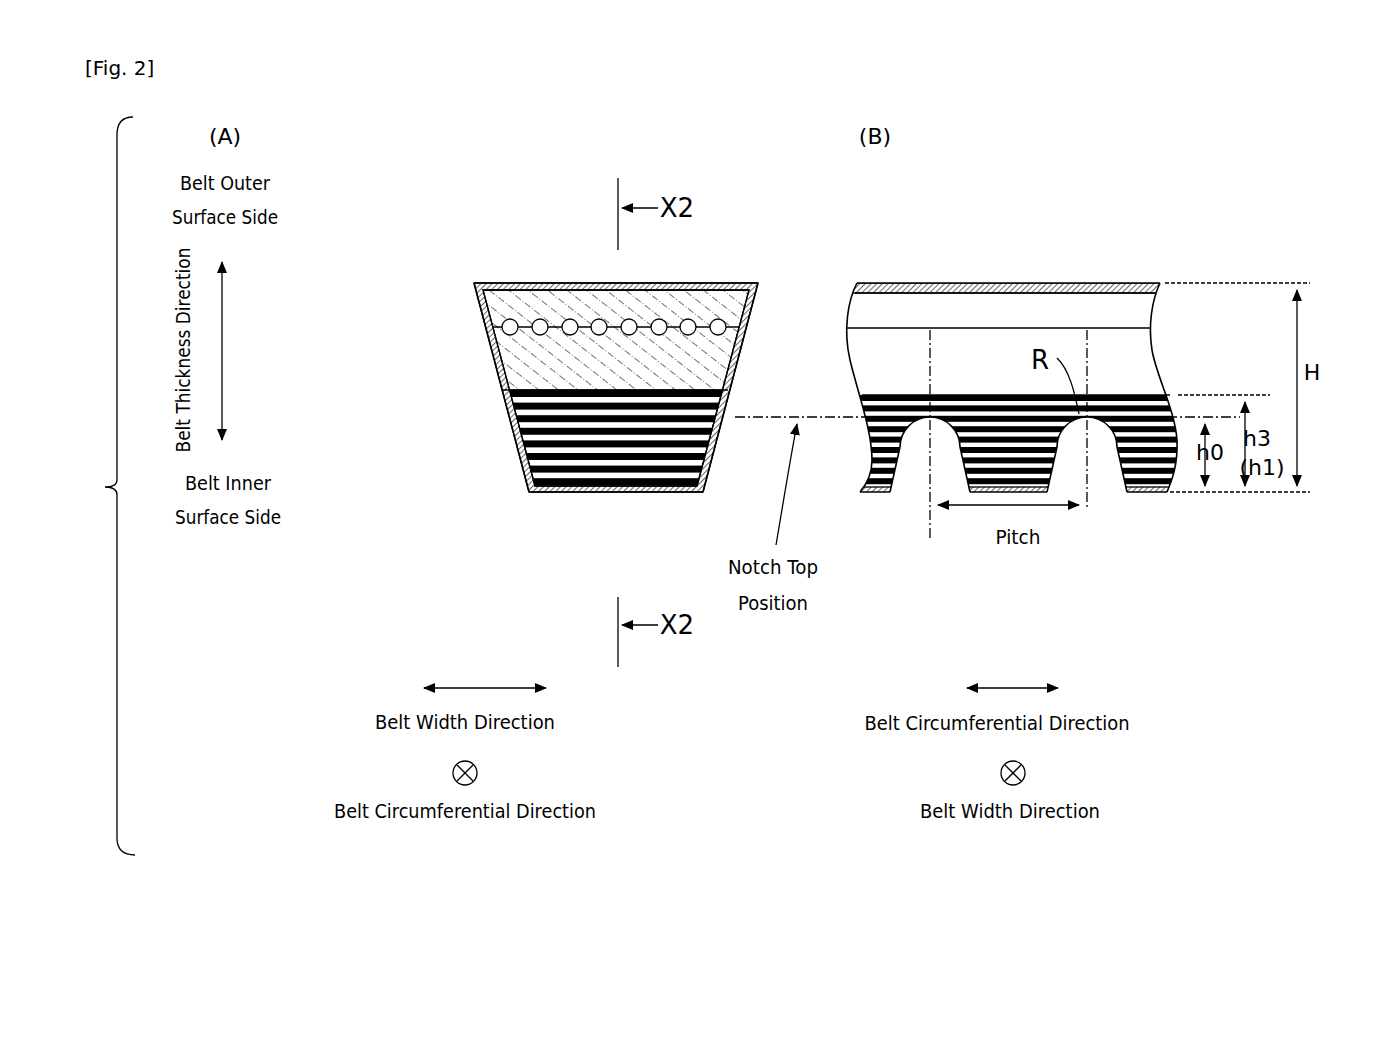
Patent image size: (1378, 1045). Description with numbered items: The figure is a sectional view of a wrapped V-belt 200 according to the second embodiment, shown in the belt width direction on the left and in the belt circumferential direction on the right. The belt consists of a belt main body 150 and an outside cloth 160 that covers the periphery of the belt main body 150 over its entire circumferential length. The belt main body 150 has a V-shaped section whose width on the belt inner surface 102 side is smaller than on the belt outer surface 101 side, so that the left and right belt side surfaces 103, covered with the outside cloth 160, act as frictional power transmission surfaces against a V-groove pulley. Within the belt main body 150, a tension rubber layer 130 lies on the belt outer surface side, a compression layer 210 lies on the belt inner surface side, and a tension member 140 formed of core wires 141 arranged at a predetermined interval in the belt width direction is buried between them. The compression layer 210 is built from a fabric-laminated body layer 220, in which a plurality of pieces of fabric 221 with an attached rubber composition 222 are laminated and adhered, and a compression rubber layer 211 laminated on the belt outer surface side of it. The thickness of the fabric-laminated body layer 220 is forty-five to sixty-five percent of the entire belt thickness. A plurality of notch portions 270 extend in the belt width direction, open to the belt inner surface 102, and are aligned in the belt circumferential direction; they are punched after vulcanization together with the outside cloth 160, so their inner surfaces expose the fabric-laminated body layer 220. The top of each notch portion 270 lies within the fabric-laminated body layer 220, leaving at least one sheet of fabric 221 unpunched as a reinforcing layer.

The belt outer surface 101 is at (663, 284).
The belt inner surface 102 is at (678, 490).
The belt side surfaces 103 is at (758, 308).
The tension rubber layer 130 is at (516, 313).
The tension member 140 is at (590, 292).
The core wire 141 is at (600, 306).
The belt main body 150 is at (320, 215).
The outside cloth 160 is at (713, 284).
The wrapped V-belt 200 is at (477, 544).
The compression layer 210 is at (401, 333).
The compression rubber layer 211 is at (471, 328).
The fabric-laminated body layer 220 is at (478, 393).
The fabric 221 is at (618, 460).
The rubber composition 222 is at (548, 460).
The notch portion 270 is at (930, 474).